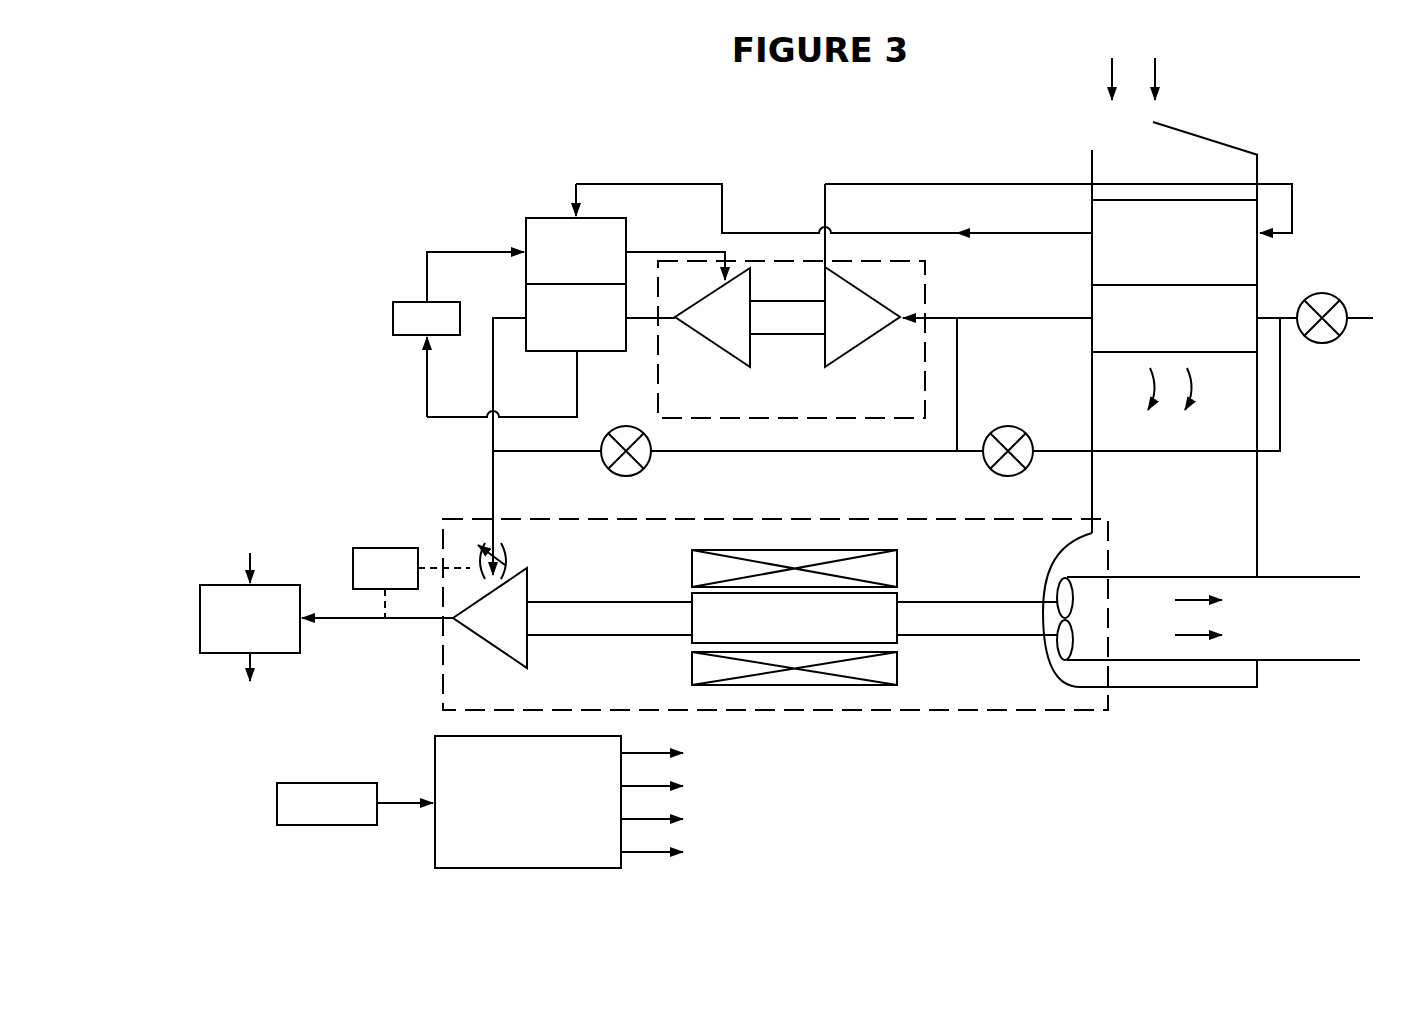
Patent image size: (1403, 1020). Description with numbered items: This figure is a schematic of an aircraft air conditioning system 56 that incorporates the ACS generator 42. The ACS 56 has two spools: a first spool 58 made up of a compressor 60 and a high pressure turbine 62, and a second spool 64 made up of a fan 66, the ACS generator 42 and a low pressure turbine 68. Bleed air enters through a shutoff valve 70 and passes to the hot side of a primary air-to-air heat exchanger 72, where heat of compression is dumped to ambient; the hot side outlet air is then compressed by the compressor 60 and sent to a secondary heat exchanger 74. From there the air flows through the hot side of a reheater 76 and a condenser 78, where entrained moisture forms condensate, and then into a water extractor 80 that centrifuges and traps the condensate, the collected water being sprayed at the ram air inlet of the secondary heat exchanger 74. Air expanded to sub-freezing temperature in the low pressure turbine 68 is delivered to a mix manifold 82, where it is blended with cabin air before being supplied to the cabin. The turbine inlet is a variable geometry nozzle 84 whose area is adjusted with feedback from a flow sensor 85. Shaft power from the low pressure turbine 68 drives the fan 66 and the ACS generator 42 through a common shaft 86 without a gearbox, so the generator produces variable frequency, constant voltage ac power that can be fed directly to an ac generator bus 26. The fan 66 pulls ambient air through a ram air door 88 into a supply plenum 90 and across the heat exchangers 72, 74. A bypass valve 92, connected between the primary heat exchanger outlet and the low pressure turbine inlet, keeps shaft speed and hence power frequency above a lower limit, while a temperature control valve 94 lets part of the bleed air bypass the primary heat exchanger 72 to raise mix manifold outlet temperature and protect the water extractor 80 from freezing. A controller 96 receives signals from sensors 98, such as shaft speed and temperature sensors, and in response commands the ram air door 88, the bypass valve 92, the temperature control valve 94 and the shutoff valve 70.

The second ac generator bus 26 is at (1160, 577).
The ACS generator 42 is at (820, 686).
The aircraft air conditioning system 56 is at (384, 151).
The first spool 58 is at (925, 268).
The compressor 60 is at (855, 348).
The high pressure turbine 62 is at (727, 357).
The second spool 64 is at (1025, 710).
The fan 66 is at (1050, 586).
The low pressure turbine 68 is at (527, 650).
The shutoff valve 70 is at (1322, 293).
The primary air-to-air heat exchanger 72 is at (1092, 334).
The secondary air-to-air heat exchanger 74 is at (1092, 219).
The reheater 76 is at (538, 216).
The condenser 78 is at (605, 351).
The water extractor 80 is at (393, 318).
The mix manifold 82 is at (280, 585).
The variable geometry inlet nozzle 84 is at (502, 549).
The flow sensor 85 is at (373, 548).
The common shaft 86 is at (945, 637).
The ram air door 88 is at (1170, 127).
The supply plenum 90 is at (1178, 505).
The bypass valve 92 is at (645, 468).
The temperature control valve 94 is at (1008, 476).
The controller 96 is at (435, 762).
The sensors 98 is at (277, 790).